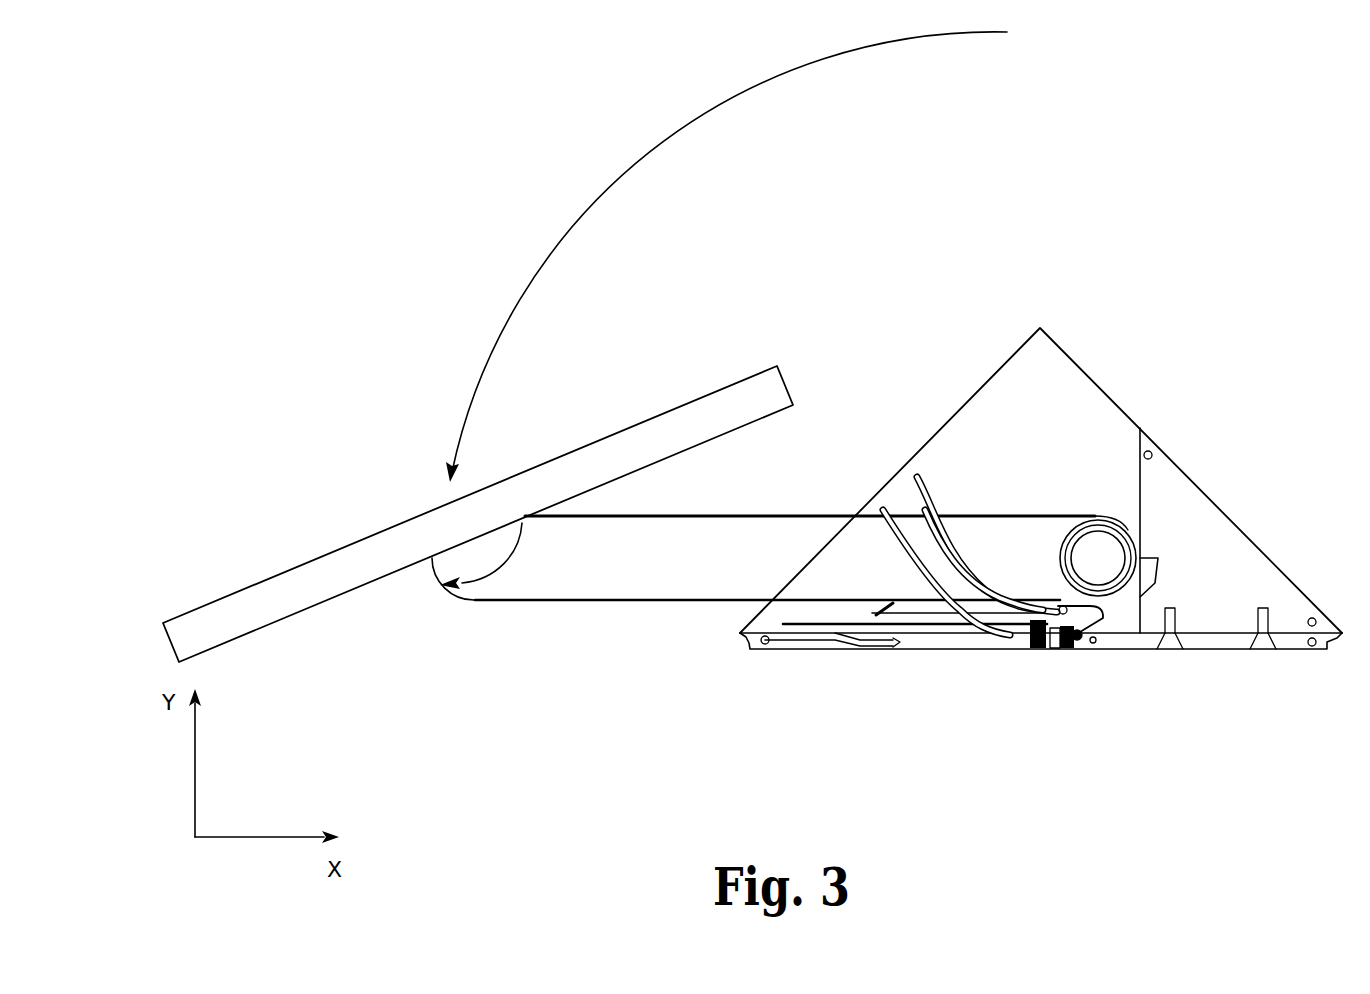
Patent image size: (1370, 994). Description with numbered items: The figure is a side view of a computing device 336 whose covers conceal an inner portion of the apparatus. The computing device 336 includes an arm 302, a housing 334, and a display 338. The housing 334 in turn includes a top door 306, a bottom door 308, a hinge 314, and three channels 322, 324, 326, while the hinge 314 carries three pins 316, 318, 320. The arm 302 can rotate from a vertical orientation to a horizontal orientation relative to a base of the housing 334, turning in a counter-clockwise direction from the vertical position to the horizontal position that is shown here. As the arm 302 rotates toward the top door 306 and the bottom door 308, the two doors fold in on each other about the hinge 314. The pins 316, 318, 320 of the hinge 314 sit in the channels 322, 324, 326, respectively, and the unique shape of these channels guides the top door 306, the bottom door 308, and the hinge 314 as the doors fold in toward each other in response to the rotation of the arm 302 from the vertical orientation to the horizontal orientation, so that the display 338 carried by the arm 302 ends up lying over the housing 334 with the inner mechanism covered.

The arm 302 is at (541, 602).
The top door 306 is at (948, 620).
The bottom door 308 is at (903, 633).
The hinge 314 is at (1097, 616).
The pin 316 is at (1052, 650).
The pin 318 is at (1070, 650).
The pin 320 is at (1031, 650).
The channel 322 is at (914, 478).
The channel 324 is at (922, 510).
The channel 326 is at (878, 513).
The housing 334 is at (1230, 520).
The computing device 336 is at (214, 88).
The display 338 is at (323, 550).